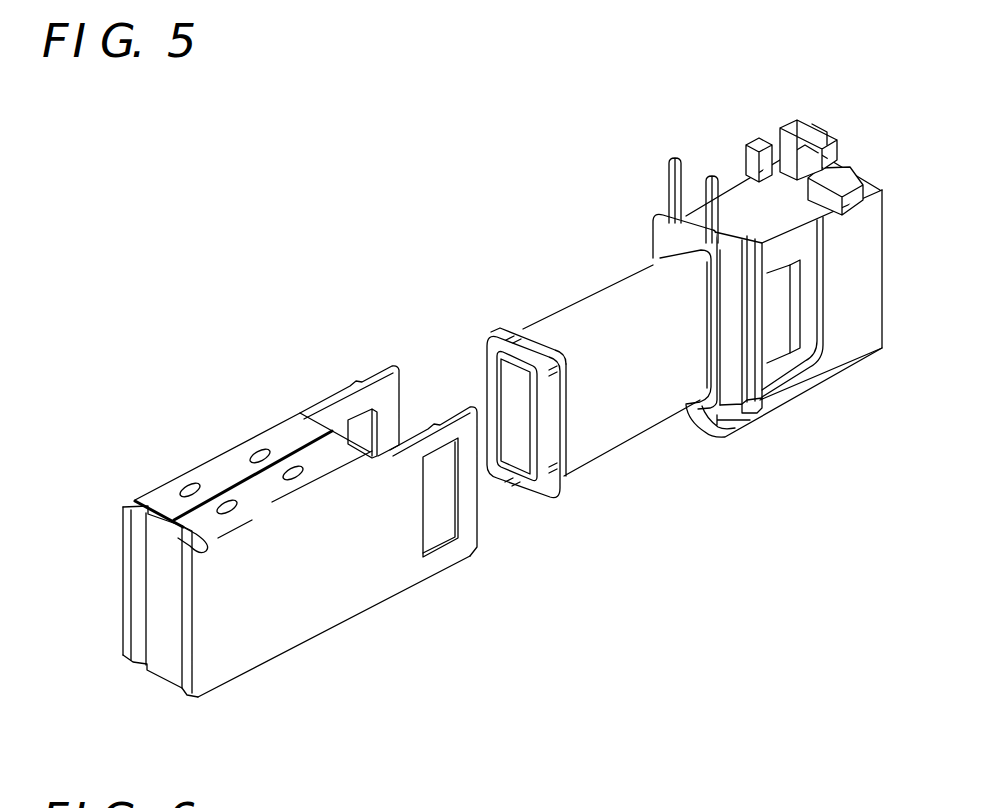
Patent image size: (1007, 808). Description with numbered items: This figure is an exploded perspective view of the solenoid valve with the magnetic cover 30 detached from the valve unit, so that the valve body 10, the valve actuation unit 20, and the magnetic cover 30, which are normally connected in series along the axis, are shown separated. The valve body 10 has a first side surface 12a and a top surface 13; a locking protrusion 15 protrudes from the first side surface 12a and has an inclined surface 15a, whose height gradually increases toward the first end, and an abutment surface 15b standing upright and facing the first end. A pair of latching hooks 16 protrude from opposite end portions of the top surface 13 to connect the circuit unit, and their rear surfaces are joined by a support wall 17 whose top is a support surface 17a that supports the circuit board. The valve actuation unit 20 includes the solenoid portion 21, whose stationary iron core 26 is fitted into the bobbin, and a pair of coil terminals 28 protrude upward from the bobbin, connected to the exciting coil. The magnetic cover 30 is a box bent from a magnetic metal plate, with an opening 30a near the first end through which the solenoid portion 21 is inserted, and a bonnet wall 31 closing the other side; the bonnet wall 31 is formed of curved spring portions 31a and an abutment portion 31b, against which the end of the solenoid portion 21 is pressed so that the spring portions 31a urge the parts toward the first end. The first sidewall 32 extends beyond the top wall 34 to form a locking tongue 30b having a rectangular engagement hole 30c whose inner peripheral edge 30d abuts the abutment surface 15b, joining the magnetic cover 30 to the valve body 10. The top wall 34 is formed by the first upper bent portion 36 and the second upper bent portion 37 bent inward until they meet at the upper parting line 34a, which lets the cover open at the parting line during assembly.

The valve body 10 is at (820, 249).
The first side surface 12a is at (864, 239).
The top surface 13 is at (771, 222).
The locking protrusion 15 is at (860, 360).
The inclined surface 15a is at (777, 345).
The abutment surface 15b is at (800, 300).
The latching hook 16 is at (770, 143).
The support wall 17 is at (829, 114).
The support surface 17a is at (812, 137).
The valve actuation unit 20 is at (587, 288).
The solenoid portion 21 is at (619, 418).
The stationary iron core 26 is at (510, 380).
The coil terminal 28 is at (712, 176).
The magnetic cover 30 is at (301, 504).
The opening 30a is at (359, 427).
The locking tongue 30b is at (393, 412).
The engagement hole 30c is at (435, 527).
The inner peripheral edge 30d is at (444, 500).
The bonnet wall 31 is at (152, 630).
The spring portion 31a is at (128, 608).
The abutment portion 31b is at (167, 558).
The first sidewall 32 is at (311, 618).
The top wall 34 is at (246, 448).
The upper parting line 34a is at (249, 480).
The first upper bent portion 36 is at (205, 517).
The second upper bent portion 37 is at (158, 494).